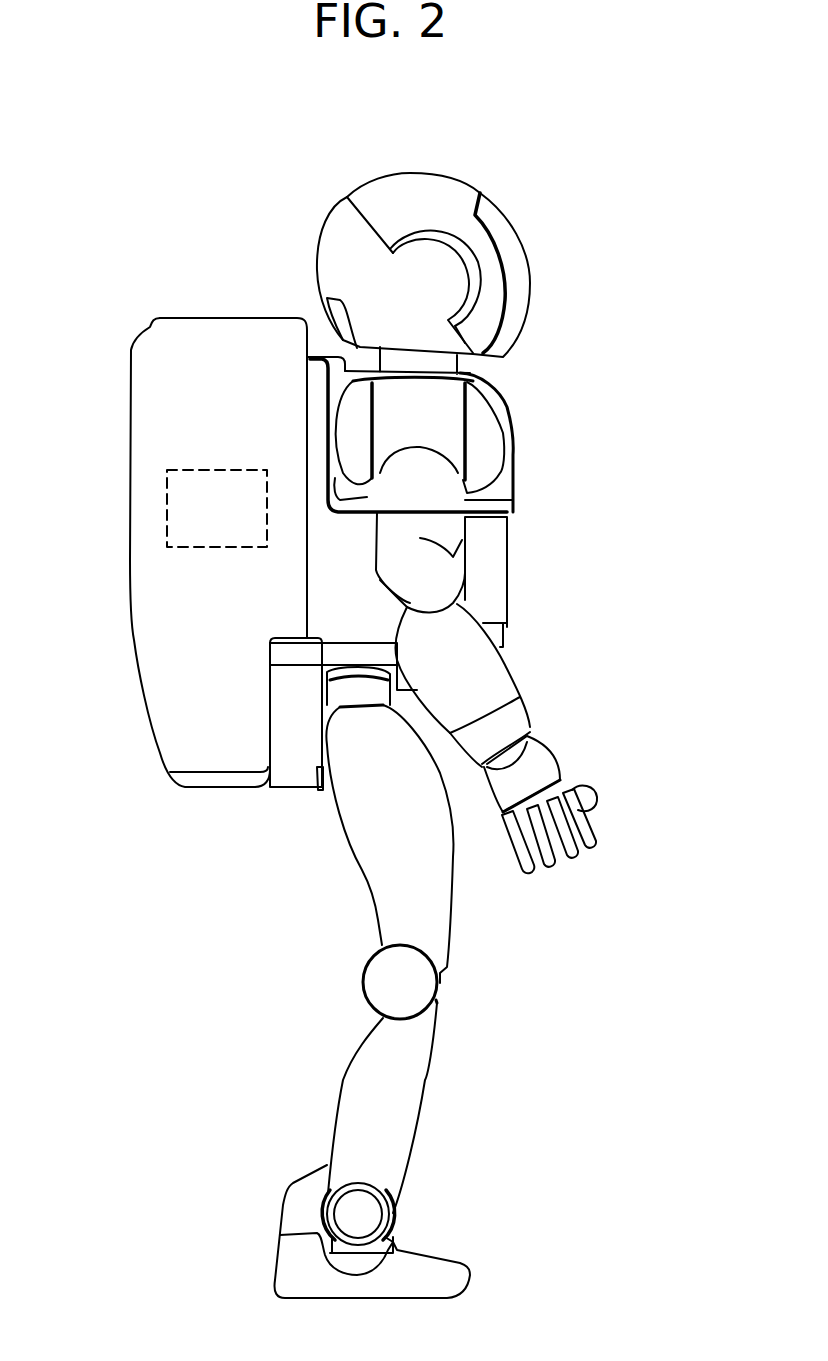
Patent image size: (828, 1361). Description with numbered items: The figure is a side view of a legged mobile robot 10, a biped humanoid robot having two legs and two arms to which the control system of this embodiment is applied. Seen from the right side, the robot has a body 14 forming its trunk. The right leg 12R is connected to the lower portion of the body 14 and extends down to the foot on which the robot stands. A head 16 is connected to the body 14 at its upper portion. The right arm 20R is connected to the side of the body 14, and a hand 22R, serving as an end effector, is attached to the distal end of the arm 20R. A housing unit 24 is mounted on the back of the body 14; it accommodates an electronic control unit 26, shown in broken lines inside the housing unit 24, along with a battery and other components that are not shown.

The legged mobile robot 10 is at (525, 403).
The right leg 12R is at (460, 993).
The body 14 is at (500, 568).
The head 16 is at (388, 172).
The right arm 20R is at (528, 673).
The right hand 22R is at (540, 768).
The housing unit 24 is at (207, 318).
The electronic control unit 26 is at (163, 517).